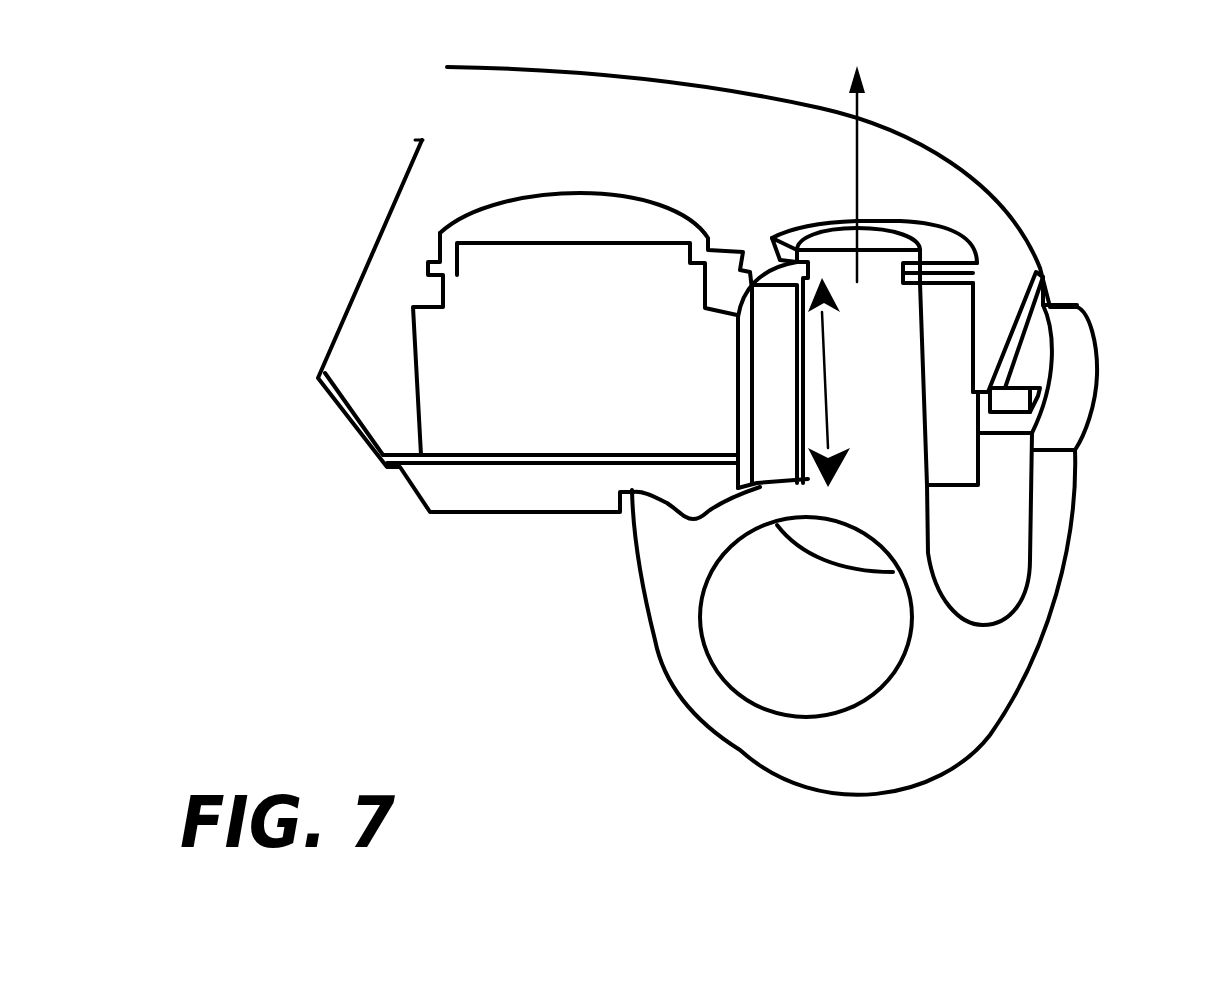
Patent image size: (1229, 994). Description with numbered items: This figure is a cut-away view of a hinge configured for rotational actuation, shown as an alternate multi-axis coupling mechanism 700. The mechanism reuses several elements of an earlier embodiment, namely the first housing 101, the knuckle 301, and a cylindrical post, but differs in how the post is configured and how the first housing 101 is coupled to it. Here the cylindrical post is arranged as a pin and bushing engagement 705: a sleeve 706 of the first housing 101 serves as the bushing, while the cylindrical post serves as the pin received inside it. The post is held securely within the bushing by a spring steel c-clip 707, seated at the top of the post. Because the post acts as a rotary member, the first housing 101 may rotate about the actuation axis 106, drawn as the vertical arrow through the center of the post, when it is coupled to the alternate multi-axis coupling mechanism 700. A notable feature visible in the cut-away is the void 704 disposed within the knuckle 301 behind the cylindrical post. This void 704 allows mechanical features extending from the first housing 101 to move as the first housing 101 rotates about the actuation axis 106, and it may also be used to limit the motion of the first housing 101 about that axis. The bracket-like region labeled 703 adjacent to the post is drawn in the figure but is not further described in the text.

The first housing 101 is at (641, 137).
The actuation axis 106 is at (858, 108).
The spring steel c-clip 707 is at (942, 252).
The alternate multi-axis coupling mechanism 700 is at (1072, 215).
The bracket 703 is at (973, 287).
The void 704 is at (983, 562).
The sleeve 706 is at (775, 327).
The pin and bushing engagement 705 is at (823, 417).
The knuckle 301 is at (935, 678).